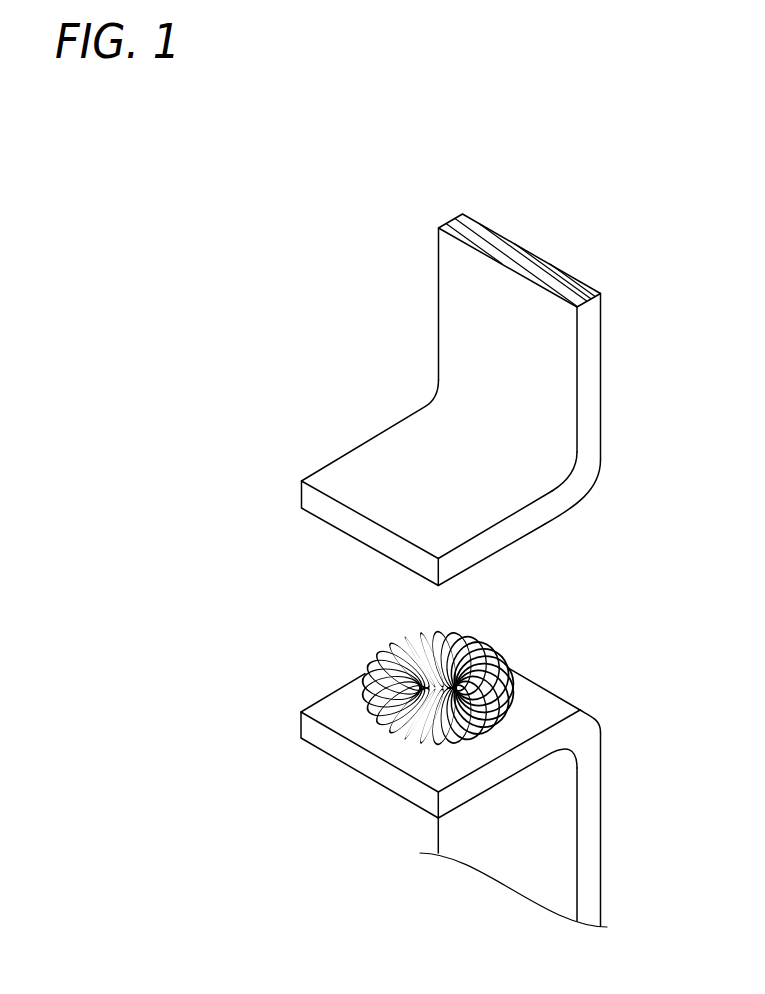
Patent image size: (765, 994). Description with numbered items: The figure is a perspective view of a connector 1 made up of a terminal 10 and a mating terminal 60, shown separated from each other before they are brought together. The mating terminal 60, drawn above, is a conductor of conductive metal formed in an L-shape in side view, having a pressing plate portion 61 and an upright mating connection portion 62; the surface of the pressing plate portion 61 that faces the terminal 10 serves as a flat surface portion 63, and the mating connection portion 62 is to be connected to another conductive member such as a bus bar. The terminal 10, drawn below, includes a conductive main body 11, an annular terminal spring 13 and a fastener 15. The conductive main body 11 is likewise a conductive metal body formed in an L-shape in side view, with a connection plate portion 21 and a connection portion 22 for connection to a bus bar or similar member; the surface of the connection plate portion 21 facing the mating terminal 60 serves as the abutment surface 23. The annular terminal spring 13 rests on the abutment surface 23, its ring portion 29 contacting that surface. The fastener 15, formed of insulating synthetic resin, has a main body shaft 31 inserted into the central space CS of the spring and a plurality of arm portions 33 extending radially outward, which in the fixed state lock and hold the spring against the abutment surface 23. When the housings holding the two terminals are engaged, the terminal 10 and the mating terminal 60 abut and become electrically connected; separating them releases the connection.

The connector 1 is at (228, 366).
The terminal 10 is at (308, 646).
The conductive main body 11 is at (530, 954).
The annular terminal spring 13 is at (506, 656).
The fastener 15 is at (438, 690).
The connection plate portion 21 is at (478, 785).
The connection portion 22 is at (545, 862).
The abutment surface 23 is at (323, 707).
The ring portion 29 is at (517, 692).
The main body shaft 31 is at (470, 648).
The arm portions 33 is at (485, 728).
The mating terminal 60 is at (378, 432).
The pressing plate portion 61 is at (547, 513).
The mating connection portion 62 is at (590, 403).
The flat surface portion 63 is at (333, 528).
The central space CS is at (415, 640).